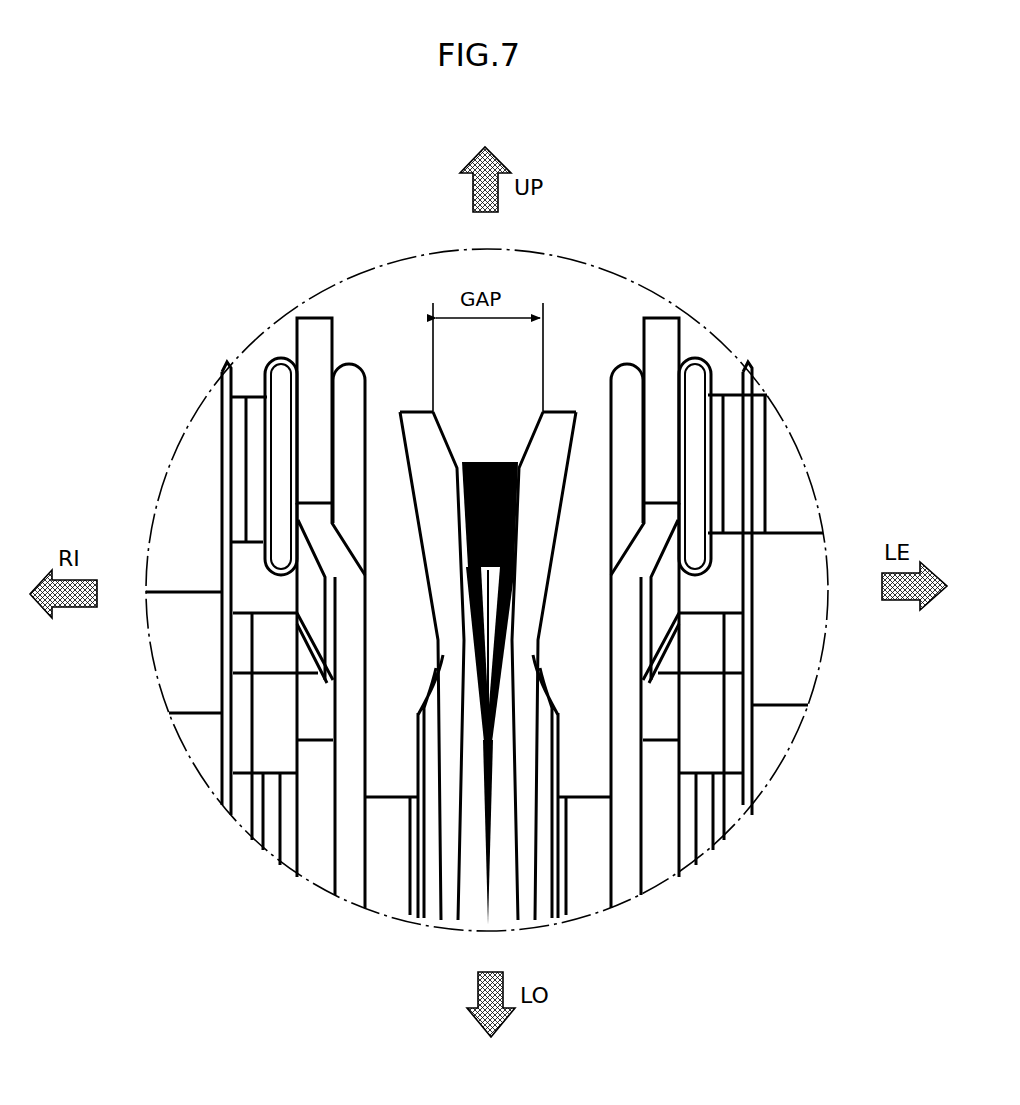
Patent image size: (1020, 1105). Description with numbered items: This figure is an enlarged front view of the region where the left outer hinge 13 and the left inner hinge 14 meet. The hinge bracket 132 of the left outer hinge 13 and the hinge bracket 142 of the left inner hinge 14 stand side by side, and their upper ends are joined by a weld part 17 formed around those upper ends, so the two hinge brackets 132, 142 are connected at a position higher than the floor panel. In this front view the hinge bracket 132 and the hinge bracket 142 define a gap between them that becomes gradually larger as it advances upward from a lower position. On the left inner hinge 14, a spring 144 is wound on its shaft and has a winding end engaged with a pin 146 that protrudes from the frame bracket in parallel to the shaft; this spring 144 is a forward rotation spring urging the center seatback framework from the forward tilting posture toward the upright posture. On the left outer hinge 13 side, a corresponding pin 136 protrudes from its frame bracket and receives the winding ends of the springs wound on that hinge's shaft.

The left outer hinge 13 is at (688, 552).
The left inner hinge 14 is at (284, 552).
The weld part 17 is at (486, 460).
The hinge bracket 132 is at (556, 403).
The pin 136 is at (786, 487).
The hinge bracket 142 is at (417, 403).
The spring 144 is at (186, 494).
The pin 146 is at (240, 415).